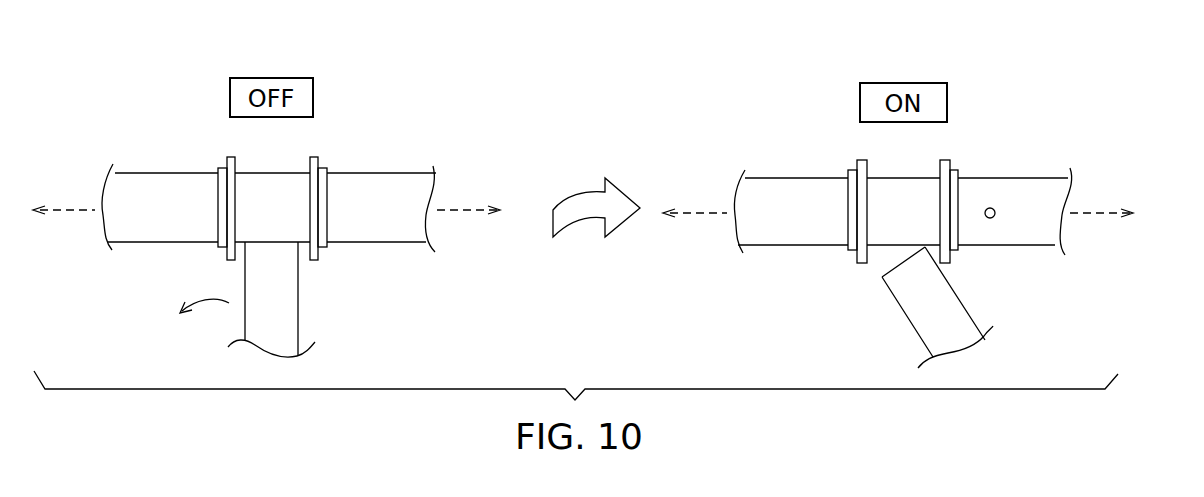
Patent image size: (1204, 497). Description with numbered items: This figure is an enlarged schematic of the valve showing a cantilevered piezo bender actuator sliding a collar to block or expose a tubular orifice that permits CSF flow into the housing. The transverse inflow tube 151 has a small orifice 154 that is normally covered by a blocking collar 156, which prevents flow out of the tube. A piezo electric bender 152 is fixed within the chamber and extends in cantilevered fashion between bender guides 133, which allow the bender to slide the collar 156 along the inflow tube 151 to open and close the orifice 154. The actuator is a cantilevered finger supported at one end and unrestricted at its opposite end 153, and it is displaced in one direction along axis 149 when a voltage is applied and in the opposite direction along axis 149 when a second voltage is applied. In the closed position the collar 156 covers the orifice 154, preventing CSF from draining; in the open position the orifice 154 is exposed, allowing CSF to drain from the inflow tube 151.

The bender guides 133 is at (227, 158).
The axis 149 is at (68, 207).
The inflow tube 151 is at (133, 232).
The piezo electric bender 152 is at (290, 327).
The opposite end 153 is at (262, 260).
The orifice 154 is at (993, 218).
The blocking collar 156 is at (270, 173).